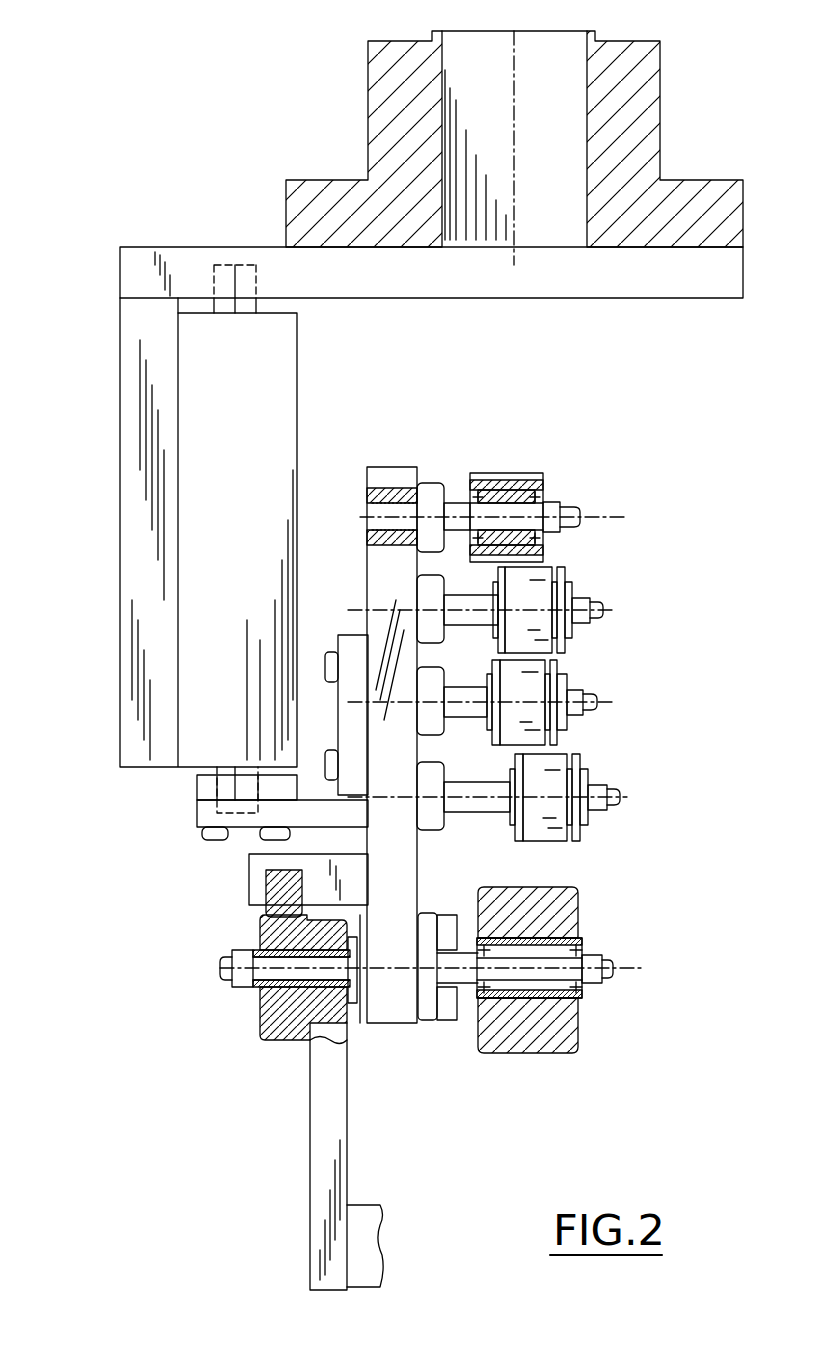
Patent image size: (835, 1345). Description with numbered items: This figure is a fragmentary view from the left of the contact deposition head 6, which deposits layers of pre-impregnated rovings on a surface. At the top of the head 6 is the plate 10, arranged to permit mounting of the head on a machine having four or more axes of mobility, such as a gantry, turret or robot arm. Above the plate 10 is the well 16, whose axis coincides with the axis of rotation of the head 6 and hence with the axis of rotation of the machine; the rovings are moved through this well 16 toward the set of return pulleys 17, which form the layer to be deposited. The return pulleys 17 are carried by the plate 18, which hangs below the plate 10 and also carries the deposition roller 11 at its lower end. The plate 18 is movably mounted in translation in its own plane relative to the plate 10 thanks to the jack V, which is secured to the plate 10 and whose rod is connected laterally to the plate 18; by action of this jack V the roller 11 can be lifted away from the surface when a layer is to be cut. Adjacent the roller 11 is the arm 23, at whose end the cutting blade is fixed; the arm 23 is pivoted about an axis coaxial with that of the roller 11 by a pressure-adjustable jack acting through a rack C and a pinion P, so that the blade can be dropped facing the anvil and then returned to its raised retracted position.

The contact deposition head 6 is at (52, 100).
The plate 10 is at (193, 258).
The well 16 is at (653, 86).
The jack V is at (278, 333).
The plate 18 is at (391, 477).
The return pulleys 17 is at (538, 553).
The rack C is at (255, 871).
The pinion P is at (262, 1008).
The arm 23 is at (327, 1115).
The deposition roller 11 is at (528, 1053).